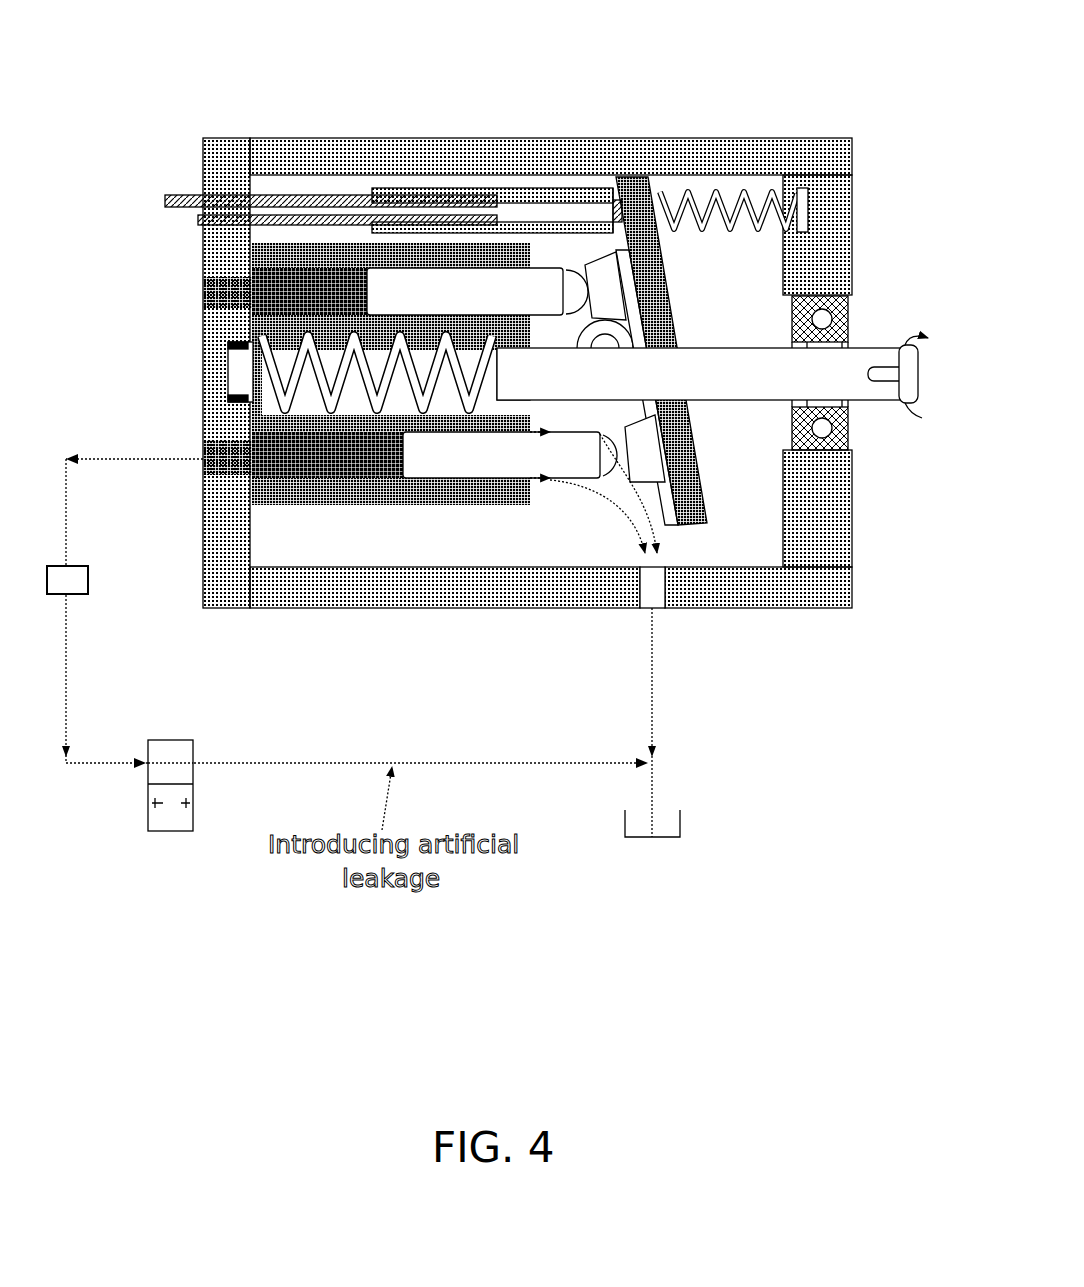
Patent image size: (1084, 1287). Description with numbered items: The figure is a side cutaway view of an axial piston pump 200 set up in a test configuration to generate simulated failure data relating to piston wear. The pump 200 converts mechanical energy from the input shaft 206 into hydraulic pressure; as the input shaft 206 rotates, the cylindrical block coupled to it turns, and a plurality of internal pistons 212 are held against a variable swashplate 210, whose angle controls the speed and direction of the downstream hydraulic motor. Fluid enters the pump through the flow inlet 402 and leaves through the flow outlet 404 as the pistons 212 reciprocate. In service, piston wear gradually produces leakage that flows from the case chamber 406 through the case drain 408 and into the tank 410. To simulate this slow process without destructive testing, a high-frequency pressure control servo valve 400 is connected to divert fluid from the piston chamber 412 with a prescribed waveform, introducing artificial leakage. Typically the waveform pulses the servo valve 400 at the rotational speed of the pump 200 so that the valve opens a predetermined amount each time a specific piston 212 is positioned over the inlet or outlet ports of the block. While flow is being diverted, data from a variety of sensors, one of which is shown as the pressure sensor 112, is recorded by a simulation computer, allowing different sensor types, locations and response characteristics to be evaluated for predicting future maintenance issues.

The axial piston pump 200 is at (271, 962).
The input shaft 206 is at (725, 367).
The swashplate 210 is at (650, 287).
The piston 212 is at (458, 483).
The pump outlet 402 is at (195, 292).
The flow outlet 404 is at (185, 443).
The case chamber 406 is at (725, 505).
The case drain 408 is at (655, 610).
The piston chamber 412 is at (325, 472).
The pressure sensor 112 is at (78, 594).
The pressure control servo valve 400 is at (153, 803).
The tank 410 is at (688, 838).